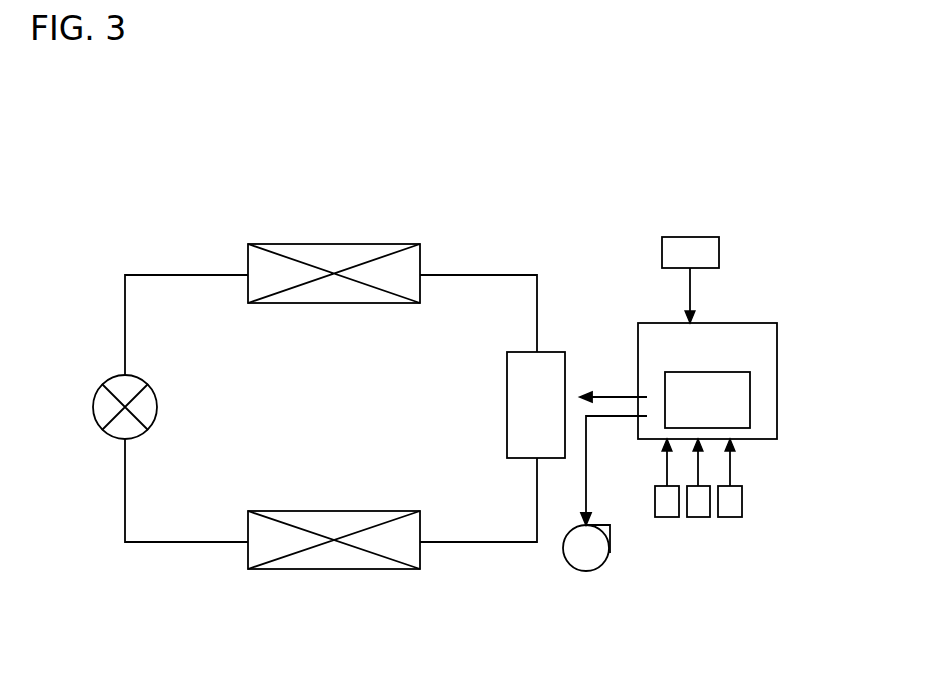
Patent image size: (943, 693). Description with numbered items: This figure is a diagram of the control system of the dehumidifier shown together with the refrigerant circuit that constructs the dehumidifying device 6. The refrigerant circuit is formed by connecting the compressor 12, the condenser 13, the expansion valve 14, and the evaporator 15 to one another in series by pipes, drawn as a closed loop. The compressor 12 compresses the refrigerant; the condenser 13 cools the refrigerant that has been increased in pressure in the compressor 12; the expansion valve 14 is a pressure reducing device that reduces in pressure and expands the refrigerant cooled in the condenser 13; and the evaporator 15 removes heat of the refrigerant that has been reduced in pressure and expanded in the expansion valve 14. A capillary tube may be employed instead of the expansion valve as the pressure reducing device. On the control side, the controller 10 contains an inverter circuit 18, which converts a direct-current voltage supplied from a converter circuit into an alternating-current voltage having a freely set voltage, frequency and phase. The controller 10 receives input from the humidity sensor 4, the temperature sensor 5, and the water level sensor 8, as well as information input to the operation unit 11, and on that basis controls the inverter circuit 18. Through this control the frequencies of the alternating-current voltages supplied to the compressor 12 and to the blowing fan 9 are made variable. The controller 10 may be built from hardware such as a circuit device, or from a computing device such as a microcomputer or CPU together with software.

The humidity sensor 4 is at (662, 517).
The temperature sensor 5 is at (695, 517).
The dehumidifying device 6 is at (478, 227).
The water level sensor 8 is at (731, 517).
The blowing fan 9 is at (598, 568).
The controller 10 is at (750, 323).
The operation unit 11 is at (690, 237).
The compressor 12 is at (548, 352).
The condenser 13 is at (340, 243).
The expansion valve 14 is at (100, 388).
The evaporator 15 is at (384, 570).
The inverter circuit 18 is at (750, 400).